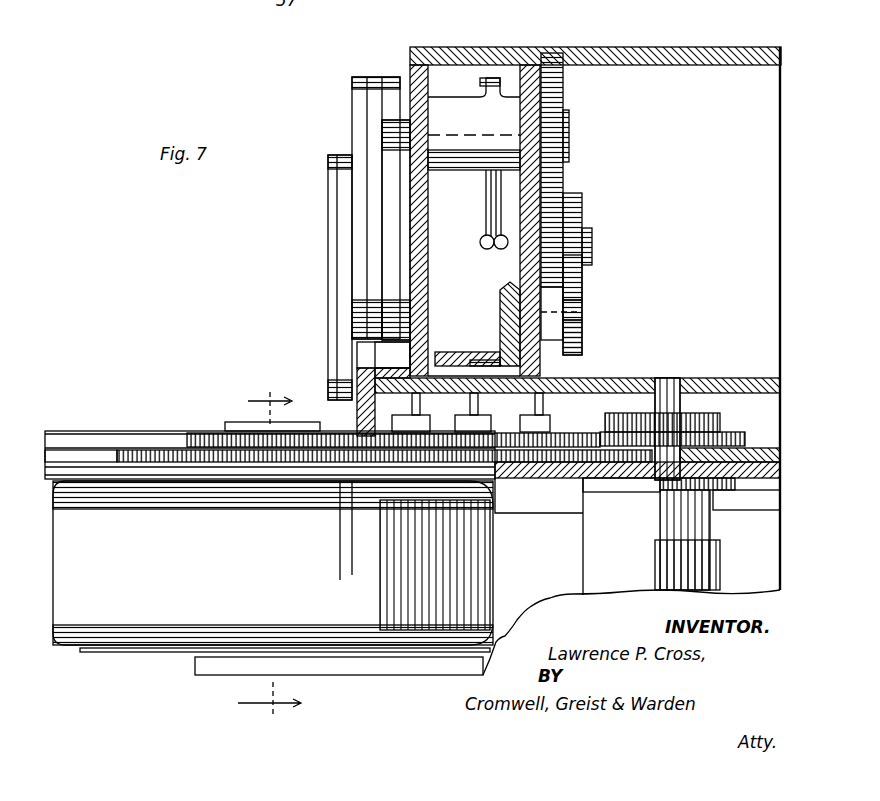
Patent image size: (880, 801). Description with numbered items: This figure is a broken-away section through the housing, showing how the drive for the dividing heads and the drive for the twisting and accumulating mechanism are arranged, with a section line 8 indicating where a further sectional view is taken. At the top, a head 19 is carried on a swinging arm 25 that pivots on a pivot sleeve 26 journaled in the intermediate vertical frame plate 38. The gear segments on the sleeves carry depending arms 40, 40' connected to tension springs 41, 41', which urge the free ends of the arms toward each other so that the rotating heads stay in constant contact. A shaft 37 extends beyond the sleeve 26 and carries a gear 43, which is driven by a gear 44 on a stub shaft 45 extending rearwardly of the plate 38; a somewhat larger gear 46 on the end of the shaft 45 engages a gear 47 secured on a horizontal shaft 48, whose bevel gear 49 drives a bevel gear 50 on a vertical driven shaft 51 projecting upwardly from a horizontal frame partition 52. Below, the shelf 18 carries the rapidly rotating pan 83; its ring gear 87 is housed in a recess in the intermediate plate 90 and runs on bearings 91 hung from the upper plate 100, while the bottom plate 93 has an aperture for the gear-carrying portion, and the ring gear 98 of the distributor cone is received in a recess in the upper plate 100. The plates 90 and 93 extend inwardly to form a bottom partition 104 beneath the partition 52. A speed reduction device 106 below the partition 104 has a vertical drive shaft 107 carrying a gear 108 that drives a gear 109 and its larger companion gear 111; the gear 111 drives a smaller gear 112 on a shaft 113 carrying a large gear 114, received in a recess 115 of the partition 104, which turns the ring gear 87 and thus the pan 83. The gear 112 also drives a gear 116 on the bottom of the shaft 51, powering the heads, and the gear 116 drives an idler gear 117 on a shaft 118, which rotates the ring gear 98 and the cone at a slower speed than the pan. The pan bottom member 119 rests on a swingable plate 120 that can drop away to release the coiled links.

The section line 8- 8 is at (269, 554).
The shelf 18 is at (223, 424).
The head 19 is at (335, 294).
The swinging arm 25 is at (366, 185).
The pivot sleeve 26 is at (445, 222).
The shaft 37 is at (569, 129).
The vertical frame plate 38 is at (540, 68).
The depending arm 40 is at (463, 203).
The depending arm 40' is at (467, 208).
The tension spring 41 is at (471, 252).
The tension spring 41' is at (517, 253).
The gear 43 is at (563, 94).
The gear 44 is at (582, 220).
The stub shaft 45 is at (592, 240).
The gear 46 is at (582, 285).
The gear 47 is at (582, 312).
The horizontal shaft 48 is at (582, 330).
The bevel gear 49 is at (500, 292).
The bevel gear 50 is at (448, 352).
The driven shaft 51 is at (471, 360).
The horizontal frame partition 52 is at (626, 378).
The pan 83 is at (278, 564).
The ring gear 87 is at (130, 455).
The intermediate plate 90 is at (76, 484).
The bearings 91 is at (310, 416).
The bottom plate 93 is at (353, 495).
The ring gear 98 is at (193, 433).
The upper plate 100 is at (96, 432).
The bottom horizontal partition member 104 is at (746, 497).
The speed reduction device 106 is at (705, 520).
The drive shaft 107 is at (675, 540).
The gear 108 is at (690, 412).
The gear 109 is at (720, 420).
The gear 111 is at (692, 433).
The gear 112 is at (575, 432).
The shaft 113 is at (548, 380).
The large gear 114 is at (515, 478).
The recess 115 is at (610, 478).
The gear 116 is at (489, 412).
The idler gear 117 is at (391, 355).
The shaft 118 is at (420, 405).
The bottom member 119 is at (148, 654).
The swingable plate 120 is at (328, 675).